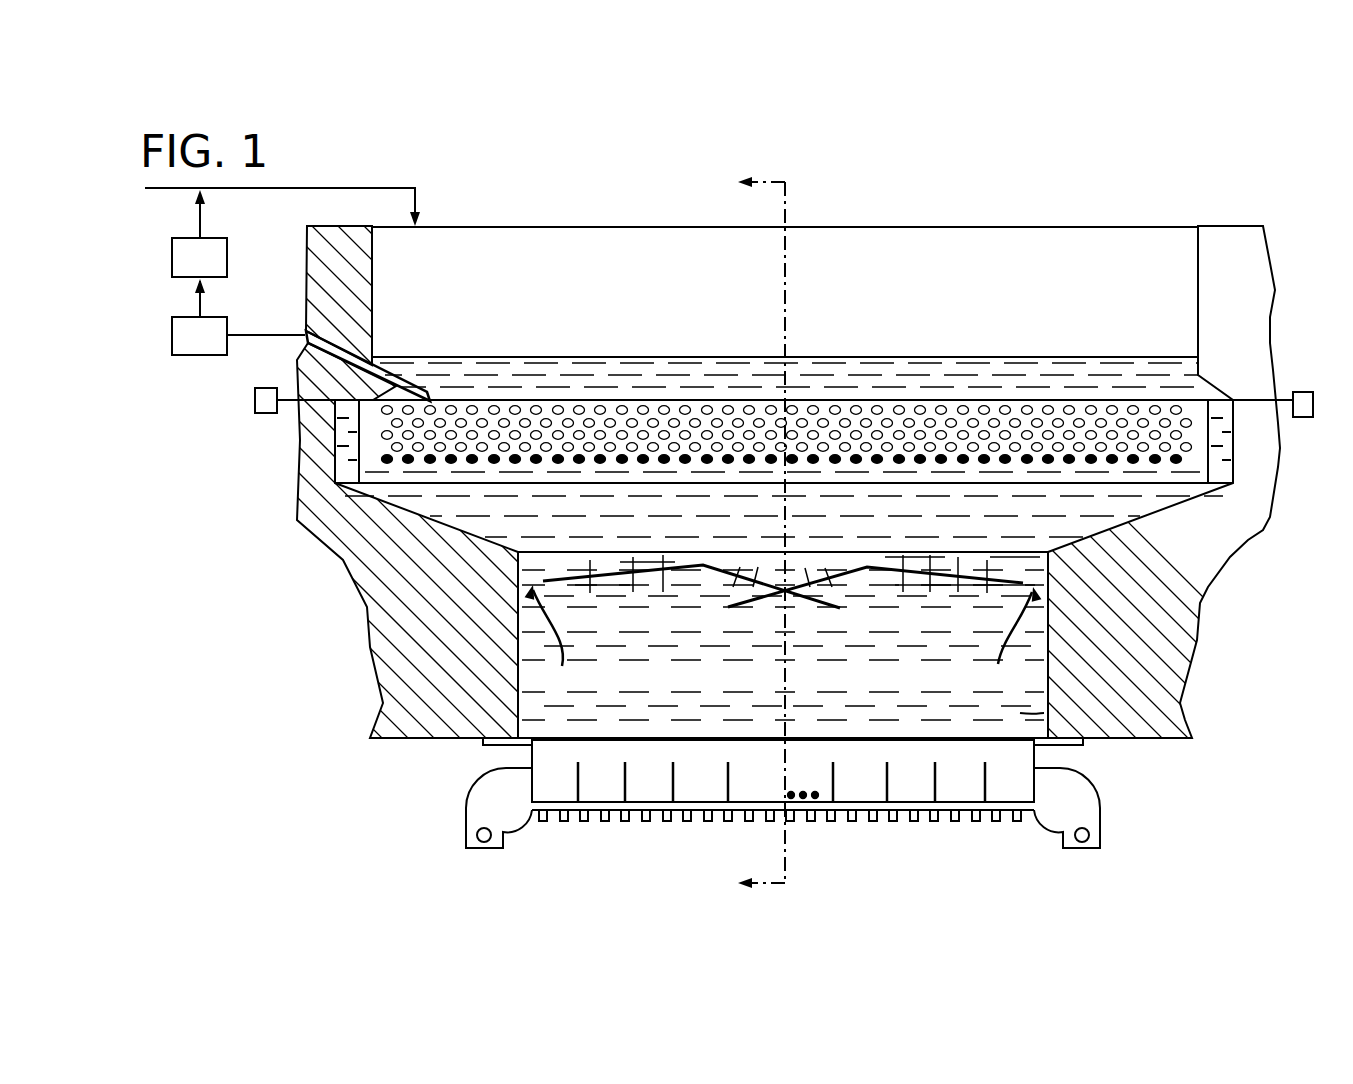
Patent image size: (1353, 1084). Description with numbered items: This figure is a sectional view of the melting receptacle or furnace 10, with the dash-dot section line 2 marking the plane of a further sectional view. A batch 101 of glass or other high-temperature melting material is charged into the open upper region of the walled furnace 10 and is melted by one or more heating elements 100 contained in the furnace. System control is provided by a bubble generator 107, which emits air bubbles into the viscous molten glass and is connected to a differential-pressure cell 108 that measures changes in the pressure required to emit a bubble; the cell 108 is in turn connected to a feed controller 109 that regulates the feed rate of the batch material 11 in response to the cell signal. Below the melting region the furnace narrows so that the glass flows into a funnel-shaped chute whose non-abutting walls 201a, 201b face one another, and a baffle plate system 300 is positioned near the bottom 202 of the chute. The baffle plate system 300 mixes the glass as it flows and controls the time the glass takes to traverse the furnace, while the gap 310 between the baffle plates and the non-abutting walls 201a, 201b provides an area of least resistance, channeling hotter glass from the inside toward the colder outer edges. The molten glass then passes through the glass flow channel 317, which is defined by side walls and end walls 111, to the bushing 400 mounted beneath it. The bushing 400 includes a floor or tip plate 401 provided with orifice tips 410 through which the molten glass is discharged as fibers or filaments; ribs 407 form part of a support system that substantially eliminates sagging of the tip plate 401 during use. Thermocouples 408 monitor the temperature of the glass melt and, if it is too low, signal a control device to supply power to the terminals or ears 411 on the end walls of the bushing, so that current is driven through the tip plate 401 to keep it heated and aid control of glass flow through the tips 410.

The section line 2- 2 is at (752, 533).
The melting receptacle or furnace 10 is at (1010, 212).
The batch material 11 is at (367, 188).
The heating elements 100 is at (352, 455).
The batch 101 is at (514, 360).
The bubble generator 107 is at (338, 378).
The differential-pressure cell 108 is at (188, 354).
The feed controller 109 is at (182, 276).
The end walls 111 is at (518, 652).
The non-abutting wall of the chute 201a is at (524, 708).
The non-abutting wall of the chute 201b is at (1042, 700).
The bottom of the chute 202 is at (1030, 553).
The baffle plate system 300 is at (702, 582).
The gap 310 is at (783, 638).
The glass flow channel 317 is at (1020, 713).
The bushing 400 is at (490, 758).
The tip plate 401 is at (550, 805).
The ribs 407 is at (673, 778).
The thermocouples 408 is at (818, 793).
The tips 410 is at (640, 817).
The terminals or ears 411 is at (1090, 817).